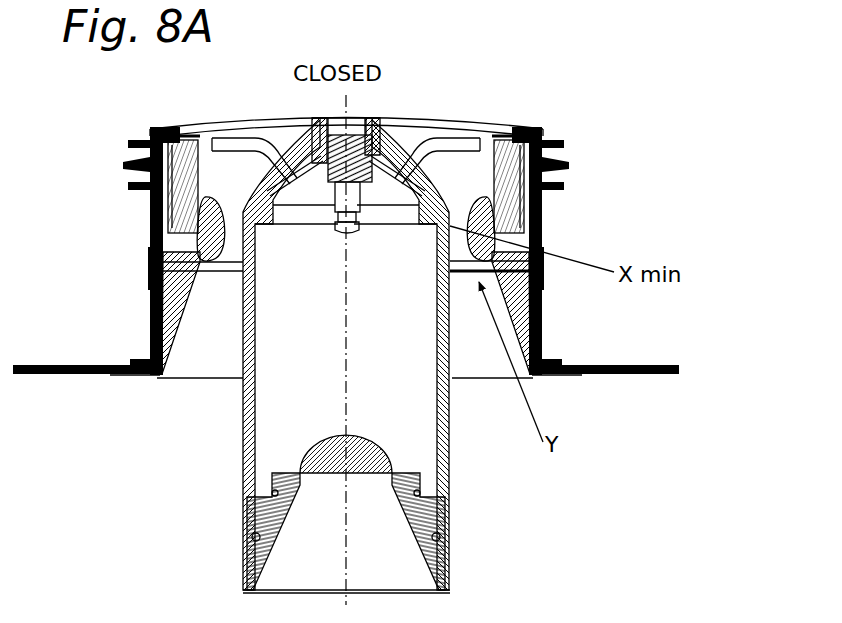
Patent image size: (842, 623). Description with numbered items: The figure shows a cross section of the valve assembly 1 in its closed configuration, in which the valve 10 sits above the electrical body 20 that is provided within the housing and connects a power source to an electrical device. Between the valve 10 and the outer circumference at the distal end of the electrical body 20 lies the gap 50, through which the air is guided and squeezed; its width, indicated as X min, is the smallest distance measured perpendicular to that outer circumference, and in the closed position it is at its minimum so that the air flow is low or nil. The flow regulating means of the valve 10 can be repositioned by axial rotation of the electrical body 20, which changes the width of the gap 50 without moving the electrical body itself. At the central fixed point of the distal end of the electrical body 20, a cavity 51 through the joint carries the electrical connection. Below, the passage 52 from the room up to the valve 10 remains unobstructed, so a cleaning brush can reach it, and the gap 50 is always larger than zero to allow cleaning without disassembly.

The exhaust valve assembly 1 is at (548, 96).
The valve 10 is at (438, 92).
The electrical body 20 is at (206, 506).
The gap 50 is at (470, 223).
The cavity 51 is at (338, 114).
The passage 52 is at (476, 343).